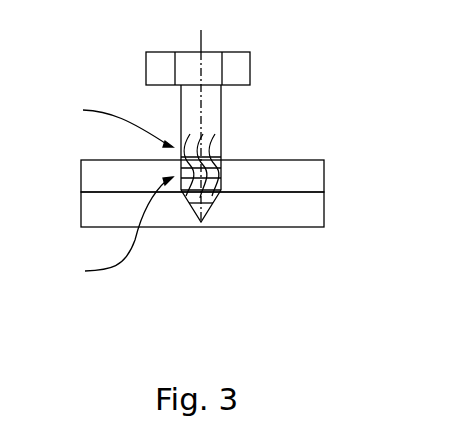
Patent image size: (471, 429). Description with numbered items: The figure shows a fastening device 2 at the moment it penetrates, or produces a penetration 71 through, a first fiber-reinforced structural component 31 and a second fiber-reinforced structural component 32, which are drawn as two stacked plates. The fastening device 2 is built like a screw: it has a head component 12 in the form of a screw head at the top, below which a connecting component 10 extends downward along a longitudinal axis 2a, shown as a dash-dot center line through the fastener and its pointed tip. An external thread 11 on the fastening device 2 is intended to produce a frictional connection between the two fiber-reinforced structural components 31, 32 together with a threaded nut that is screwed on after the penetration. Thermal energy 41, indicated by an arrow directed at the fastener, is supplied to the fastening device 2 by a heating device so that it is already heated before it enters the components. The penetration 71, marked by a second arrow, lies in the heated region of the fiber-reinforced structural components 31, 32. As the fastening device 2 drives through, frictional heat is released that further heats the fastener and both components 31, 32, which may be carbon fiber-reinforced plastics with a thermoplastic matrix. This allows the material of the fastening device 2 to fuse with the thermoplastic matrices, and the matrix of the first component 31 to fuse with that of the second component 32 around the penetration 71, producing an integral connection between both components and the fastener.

The fastening device 2 is at (199, 150).
The longitudinal axis 2a is at (211, 207).
The connecting component 10 is at (254, 163).
The external thread 11 is at (213, 173).
The head component 12 is at (235, 67).
The first fiber-reinforced structural component 31 is at (310, 178).
The second fiber-reinforced structural component 32 is at (310, 216).
The thermal energy 41 is at (108, 122).
The penetration 71 is at (114, 232).